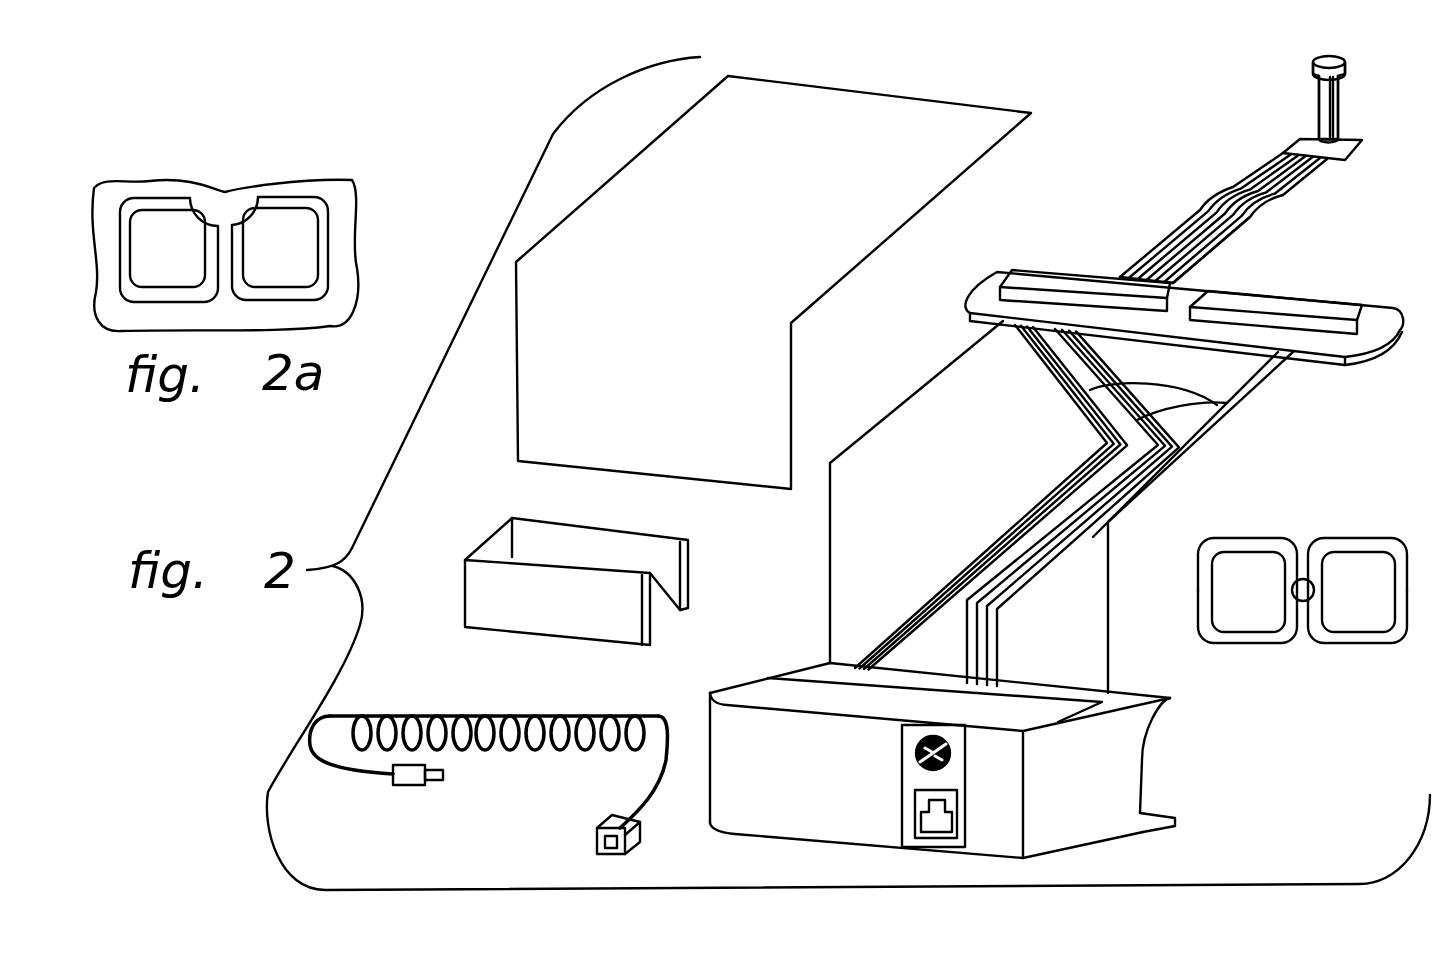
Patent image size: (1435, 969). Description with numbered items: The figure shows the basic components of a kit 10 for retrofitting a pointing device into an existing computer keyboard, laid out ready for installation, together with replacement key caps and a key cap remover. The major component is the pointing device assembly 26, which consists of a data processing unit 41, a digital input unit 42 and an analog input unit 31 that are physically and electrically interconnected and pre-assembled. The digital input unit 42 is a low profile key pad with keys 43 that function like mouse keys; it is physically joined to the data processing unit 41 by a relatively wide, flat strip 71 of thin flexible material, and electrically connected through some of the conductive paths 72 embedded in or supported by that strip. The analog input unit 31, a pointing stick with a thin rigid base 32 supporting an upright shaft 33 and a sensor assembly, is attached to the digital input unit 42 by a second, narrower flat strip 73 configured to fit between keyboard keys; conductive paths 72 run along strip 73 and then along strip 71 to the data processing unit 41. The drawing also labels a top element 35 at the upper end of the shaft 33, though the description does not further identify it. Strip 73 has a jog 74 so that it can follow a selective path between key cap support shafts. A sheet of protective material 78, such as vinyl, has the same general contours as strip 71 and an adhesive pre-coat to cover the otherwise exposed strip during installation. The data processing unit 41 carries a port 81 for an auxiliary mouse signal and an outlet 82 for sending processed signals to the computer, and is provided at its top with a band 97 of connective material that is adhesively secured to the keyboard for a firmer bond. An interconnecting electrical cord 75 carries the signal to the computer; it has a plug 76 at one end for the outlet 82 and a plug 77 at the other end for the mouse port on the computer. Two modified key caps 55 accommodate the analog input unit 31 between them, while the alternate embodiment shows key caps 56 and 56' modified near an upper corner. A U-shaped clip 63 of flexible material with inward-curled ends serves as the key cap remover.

In FIG. 2, the kit 10 is at (1070, 91).
In FIG. 2, the pointing device assembly 26 is at (1180, 518).
In FIG. 2, the analog input unit 31 is at (1362, 82).
In FIG. 2, the base 32 is at (1375, 134).
In FIG. 2, the upright shaft 33 is at (1317, 99).
In FIG. 2, the bolt head 35 is at (1318, 56).
In FIG. 2, the data processing unit 41 is at (735, 660).
In FIG. 2, the digital input unit 42 is at (1393, 362).
In FIG. 2, the keys 43 is at (1090, 285).
In FIG. 2, the key cap 55 is at (1249, 645).
In FIG. 2A, the key cap 56 is at (169, 190).
In FIG. 2A, the key cap 56' is at (280, 189).
In FIG. 2, the clip 63 is at (497, 540).
In FIG. 2, the strip 71 is at (1190, 455).
In FIG. 2, the electrically conductive paths 72 is at (1193, 220).
In FIG. 2, the strip 73 is at (1200, 183).
In FIG. 2, the jog 74 is at (1258, 226).
In FIG. 2, the electrical cord 75 is at (447, 716).
In FIG. 2, the plug 76 is at (600, 828).
In FIG. 2, the plug 77 is at (410, 788).
In FIG. 2, the sheet of protective material 78 is at (920, 222).
In FIG. 2, the port 81 is at (927, 763).
In FIG. 2, the outlet 82 is at (913, 820).
In FIG. 2, the band 97 is at (1148, 813).